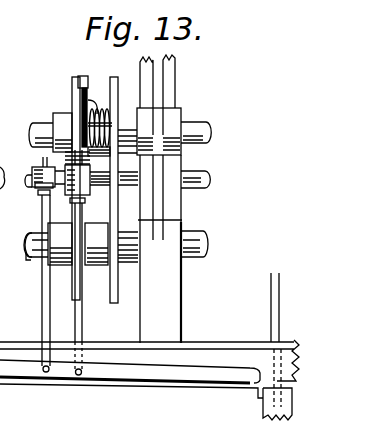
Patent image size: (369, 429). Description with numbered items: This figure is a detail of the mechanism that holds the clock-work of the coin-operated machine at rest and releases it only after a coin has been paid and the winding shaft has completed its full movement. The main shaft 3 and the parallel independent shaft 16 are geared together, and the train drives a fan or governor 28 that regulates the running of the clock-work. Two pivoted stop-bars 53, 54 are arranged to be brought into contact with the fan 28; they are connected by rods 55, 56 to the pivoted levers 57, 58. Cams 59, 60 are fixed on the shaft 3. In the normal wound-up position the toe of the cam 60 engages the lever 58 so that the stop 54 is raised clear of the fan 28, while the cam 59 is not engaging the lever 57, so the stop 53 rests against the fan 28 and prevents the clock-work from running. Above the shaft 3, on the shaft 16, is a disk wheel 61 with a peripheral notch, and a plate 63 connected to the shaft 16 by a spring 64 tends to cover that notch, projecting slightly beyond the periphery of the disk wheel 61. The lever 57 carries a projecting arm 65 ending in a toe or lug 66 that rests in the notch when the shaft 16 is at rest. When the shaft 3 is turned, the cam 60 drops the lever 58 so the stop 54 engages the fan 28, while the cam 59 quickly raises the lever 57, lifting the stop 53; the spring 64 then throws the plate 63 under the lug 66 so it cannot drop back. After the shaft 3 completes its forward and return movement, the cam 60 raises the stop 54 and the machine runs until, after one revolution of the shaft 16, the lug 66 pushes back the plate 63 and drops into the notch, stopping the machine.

The shaft 3 is at (28, 260).
The independent shaft 16 is at (187, 127).
The fan or governor 28 is at (291, 398).
The stop-bar 53 is at (207, 383).
The stop-bar 54 is at (123, 372).
The rod 55 is at (80, 311).
The rod 56 is at (43, 303).
The pivoted lever 57 is at (82, 200).
The pivoted lever 58 is at (41, 190).
The cam 59 is at (82, 214).
The cam 60 is at (41, 212).
The disk wheel 61 is at (73, 98).
The plate 63 is at (73, 91).
The spring 64 is at (94, 110).
The projecting arm 65 is at (82, 157).
The toe or lug 66 is at (78, 78).